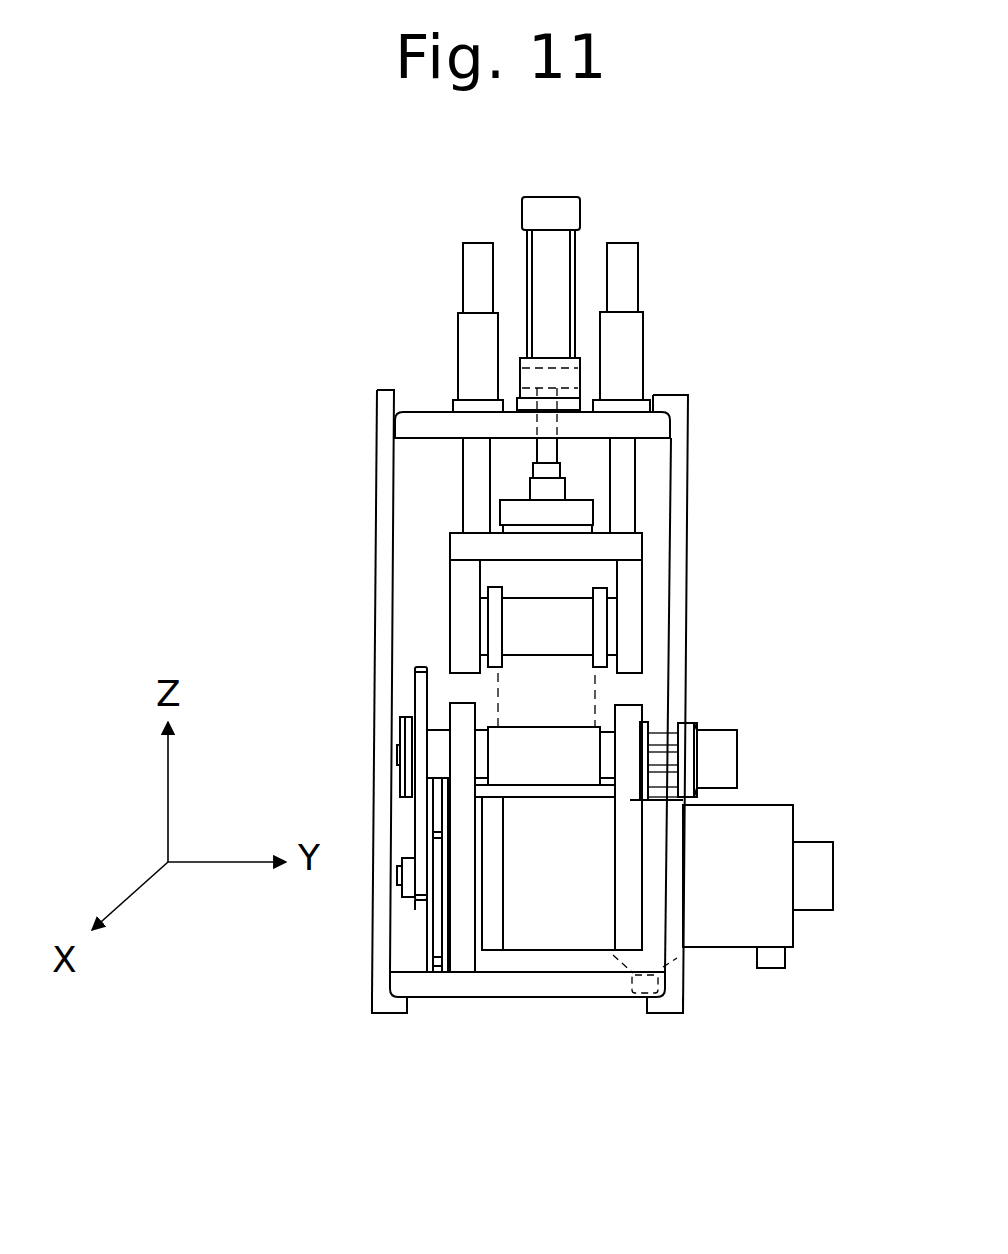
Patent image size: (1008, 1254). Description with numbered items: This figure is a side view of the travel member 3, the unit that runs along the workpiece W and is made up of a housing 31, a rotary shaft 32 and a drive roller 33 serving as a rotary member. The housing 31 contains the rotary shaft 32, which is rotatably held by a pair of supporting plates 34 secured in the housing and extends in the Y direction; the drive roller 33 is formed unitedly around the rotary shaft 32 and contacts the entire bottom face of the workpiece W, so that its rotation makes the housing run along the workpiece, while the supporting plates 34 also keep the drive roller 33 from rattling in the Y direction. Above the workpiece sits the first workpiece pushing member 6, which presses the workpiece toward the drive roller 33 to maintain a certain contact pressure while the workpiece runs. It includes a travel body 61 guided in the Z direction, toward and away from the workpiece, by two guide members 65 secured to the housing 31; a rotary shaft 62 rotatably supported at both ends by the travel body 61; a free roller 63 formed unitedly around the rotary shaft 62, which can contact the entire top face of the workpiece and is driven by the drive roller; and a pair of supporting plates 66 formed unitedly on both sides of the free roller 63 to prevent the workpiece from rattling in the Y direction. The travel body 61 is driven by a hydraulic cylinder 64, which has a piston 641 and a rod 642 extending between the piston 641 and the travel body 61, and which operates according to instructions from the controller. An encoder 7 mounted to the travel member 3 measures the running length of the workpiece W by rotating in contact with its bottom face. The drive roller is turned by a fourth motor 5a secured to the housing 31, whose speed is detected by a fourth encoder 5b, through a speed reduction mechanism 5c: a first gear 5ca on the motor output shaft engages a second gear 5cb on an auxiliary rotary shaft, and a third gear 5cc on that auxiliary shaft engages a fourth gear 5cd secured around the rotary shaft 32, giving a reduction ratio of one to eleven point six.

The travel member 3 is at (702, 498).
The housing 31 is at (683, 532).
The rotary shaft 32 is at (438, 755).
The drive roller 33 is at (583, 765).
The supporting plates 34 is at (633, 830).
The fourth motor 5a is at (555, 930).
The fourth encoder 5b is at (815, 905).
The speed reduction mechanism 5c is at (423, 913).
The first gear 5ca is at (425, 838).
The second gear 5cb is at (437, 966).
The third gear 5cc is at (418, 900).
The fourth gear 5cd is at (415, 665).
The first workpiece pushing member 6 is at (577, 573).
The travel body 61 is at (635, 550).
The rotary shaft 62 is at (480, 637).
The free roller 63 is at (513, 618).
The hydraulic cylinder 64 is at (518, 212).
The piston 641 is at (570, 380).
The rod 642 is at (545, 455).
The guide members 65 is at (463, 330).
The supporting plates 66 is at (480, 592).
The encoder 7 is at (725, 742).
The workpiece W is at (597, 690).